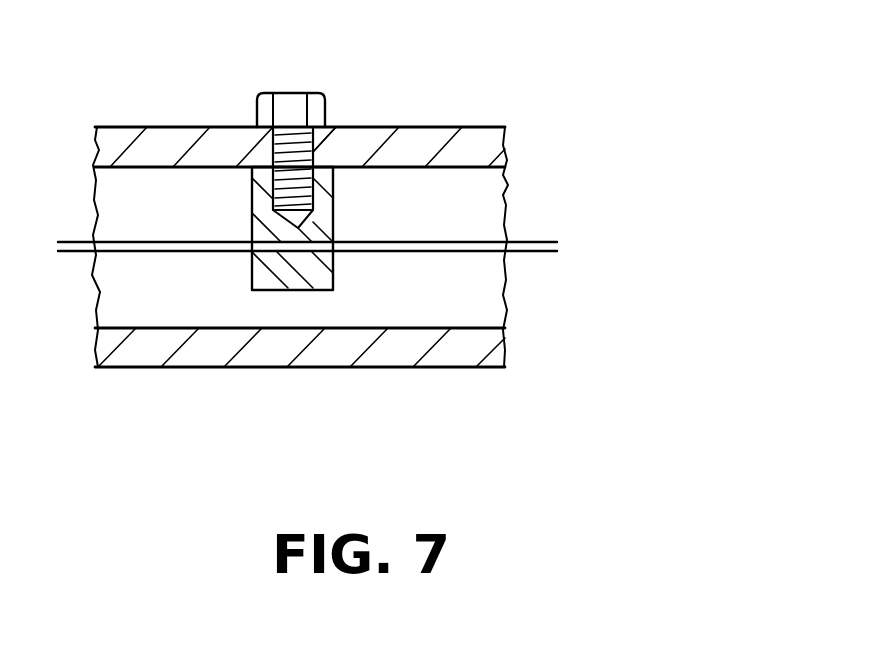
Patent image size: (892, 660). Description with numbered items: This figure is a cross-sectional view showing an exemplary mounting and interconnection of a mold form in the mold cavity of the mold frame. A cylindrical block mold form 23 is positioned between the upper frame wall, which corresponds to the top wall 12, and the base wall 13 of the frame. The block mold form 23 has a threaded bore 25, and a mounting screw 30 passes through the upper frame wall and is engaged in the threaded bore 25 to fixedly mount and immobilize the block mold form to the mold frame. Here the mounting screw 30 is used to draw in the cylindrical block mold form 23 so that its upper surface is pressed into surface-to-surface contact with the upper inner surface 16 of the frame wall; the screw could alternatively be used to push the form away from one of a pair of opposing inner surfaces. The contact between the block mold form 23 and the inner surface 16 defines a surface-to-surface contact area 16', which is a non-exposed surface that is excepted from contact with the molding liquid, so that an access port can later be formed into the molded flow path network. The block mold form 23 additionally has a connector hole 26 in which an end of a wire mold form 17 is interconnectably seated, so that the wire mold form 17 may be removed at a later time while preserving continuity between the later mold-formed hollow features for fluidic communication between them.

The top wall 12 is at (130, 127).
The base wall 13 is at (203, 368).
The inner surface 16 is at (519, 247).
The surface-to-surface contact area 16' is at (387, 114).
The wire mold form 17 is at (168, 258).
The cylindrical block mold form 23 is at (252, 210).
The threaded bore 25 is at (337, 190).
The connector hole 26 is at (287, 257).
The mounting screw 30 is at (295, 92).